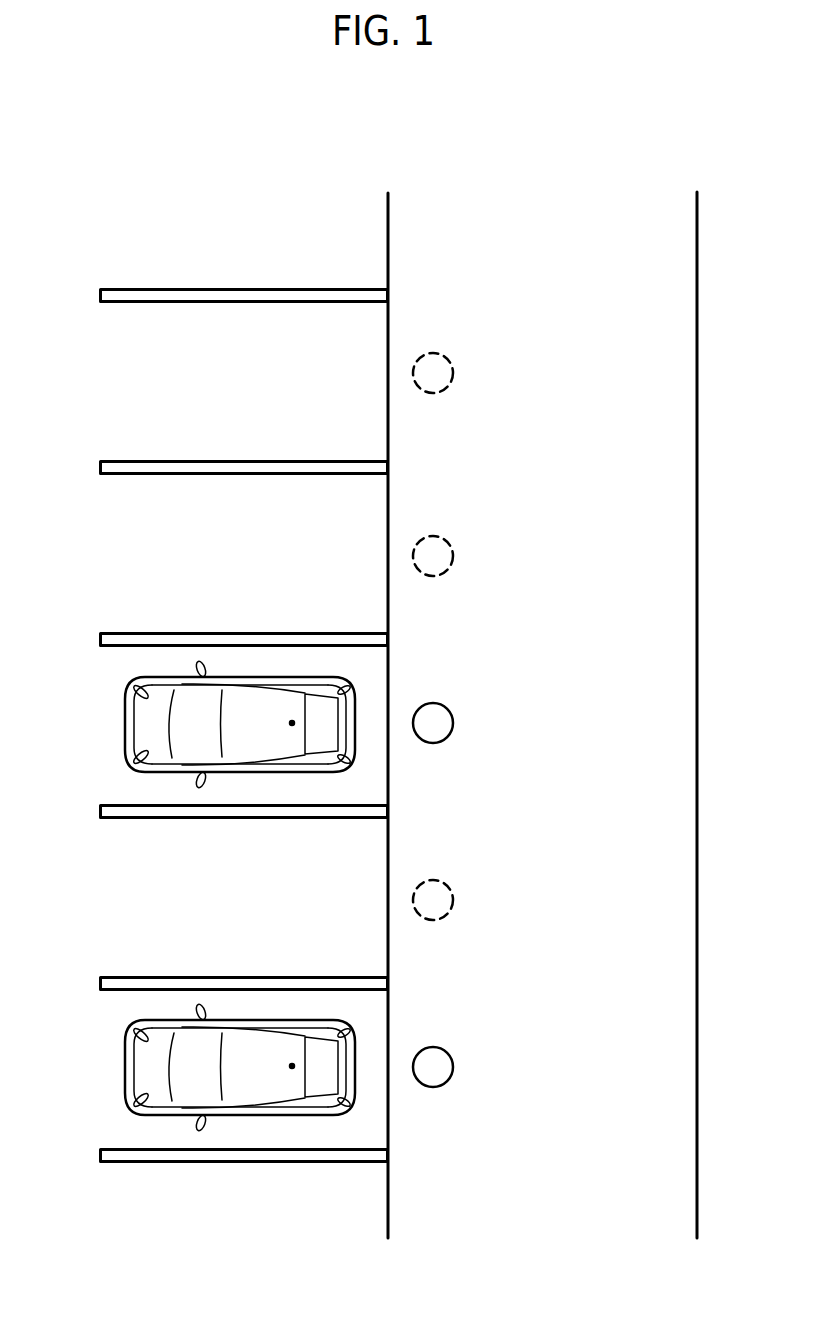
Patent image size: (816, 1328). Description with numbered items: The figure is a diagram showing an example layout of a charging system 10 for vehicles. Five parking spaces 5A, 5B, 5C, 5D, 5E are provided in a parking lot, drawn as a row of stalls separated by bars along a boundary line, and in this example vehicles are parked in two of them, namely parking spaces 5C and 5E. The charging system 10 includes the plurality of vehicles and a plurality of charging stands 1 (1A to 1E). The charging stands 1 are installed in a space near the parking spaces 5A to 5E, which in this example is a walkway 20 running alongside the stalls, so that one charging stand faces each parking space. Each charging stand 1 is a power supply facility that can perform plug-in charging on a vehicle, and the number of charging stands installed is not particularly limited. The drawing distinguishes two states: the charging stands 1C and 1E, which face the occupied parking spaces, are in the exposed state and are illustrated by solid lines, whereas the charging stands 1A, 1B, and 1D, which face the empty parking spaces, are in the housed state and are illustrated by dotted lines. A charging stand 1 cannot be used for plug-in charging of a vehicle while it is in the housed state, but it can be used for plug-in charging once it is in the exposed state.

The charging stand 1 is at (474, 706).
The charging stand 1A is at (447, 359).
The charging stand 1B is at (447, 542).
The charging stand 1C is at (447, 709).
The charging stand 1D is at (447, 886).
The charging stand 1E is at (447, 1053).
The parking space 5A is at (110, 392).
The parking space 5B is at (110, 560).
The parking space 5C is at (113, 718).
The parking space 5D is at (110, 898).
The parking space 5E is at (110, 1057).
The charging system 10 is at (578, 106).
The walkway 20 is at (668, 210).